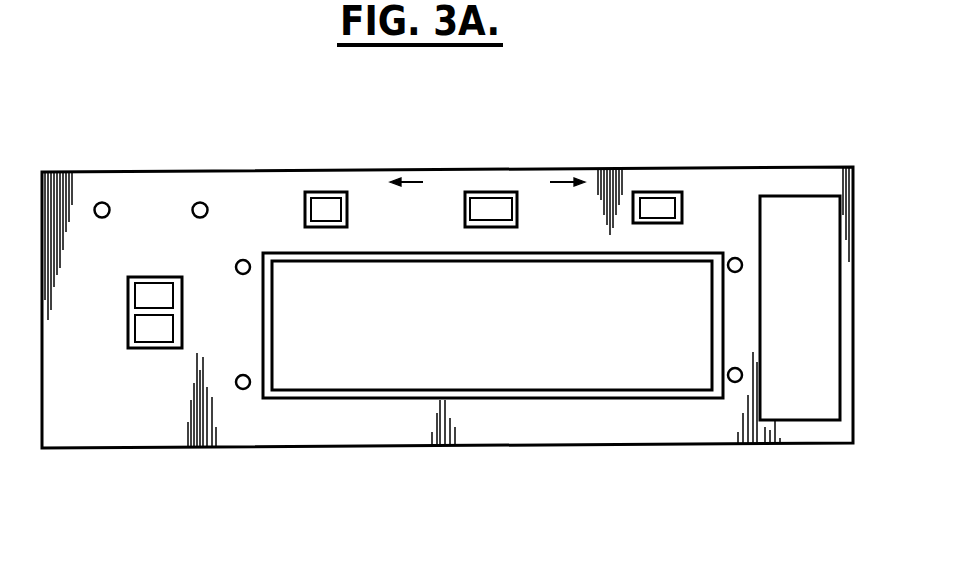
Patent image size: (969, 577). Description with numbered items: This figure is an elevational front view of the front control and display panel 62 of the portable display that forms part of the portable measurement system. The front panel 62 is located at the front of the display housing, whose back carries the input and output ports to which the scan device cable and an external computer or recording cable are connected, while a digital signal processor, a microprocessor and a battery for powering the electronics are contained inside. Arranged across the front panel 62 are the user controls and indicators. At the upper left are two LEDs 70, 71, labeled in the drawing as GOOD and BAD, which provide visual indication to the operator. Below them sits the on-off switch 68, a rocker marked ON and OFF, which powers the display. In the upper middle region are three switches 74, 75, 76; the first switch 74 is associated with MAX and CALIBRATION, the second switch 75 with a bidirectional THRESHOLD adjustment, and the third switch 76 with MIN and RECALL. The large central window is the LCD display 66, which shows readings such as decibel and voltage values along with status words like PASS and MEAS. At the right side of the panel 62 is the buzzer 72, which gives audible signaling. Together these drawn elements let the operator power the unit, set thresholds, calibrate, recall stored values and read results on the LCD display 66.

The front control and display panel 62 is at (682, 420).
The LCD display 66 is at (350, 378).
The on-off switch 68 is at (127, 317).
The LED 70 is at (108, 205).
The LED 71 is at (206, 205).
The buzzer 72 is at (803, 196).
The switch 74 is at (330, 215).
The switch 75 is at (500, 212).
The switch 76 is at (667, 200).